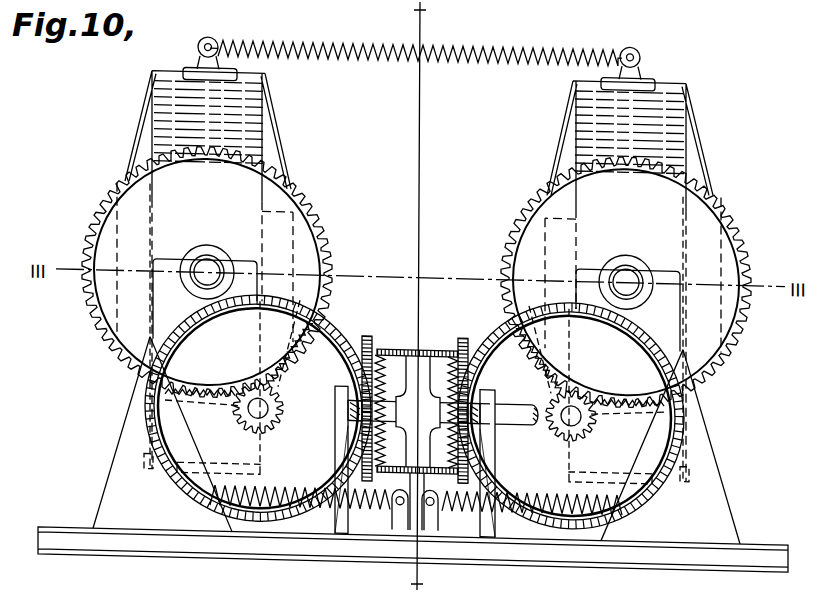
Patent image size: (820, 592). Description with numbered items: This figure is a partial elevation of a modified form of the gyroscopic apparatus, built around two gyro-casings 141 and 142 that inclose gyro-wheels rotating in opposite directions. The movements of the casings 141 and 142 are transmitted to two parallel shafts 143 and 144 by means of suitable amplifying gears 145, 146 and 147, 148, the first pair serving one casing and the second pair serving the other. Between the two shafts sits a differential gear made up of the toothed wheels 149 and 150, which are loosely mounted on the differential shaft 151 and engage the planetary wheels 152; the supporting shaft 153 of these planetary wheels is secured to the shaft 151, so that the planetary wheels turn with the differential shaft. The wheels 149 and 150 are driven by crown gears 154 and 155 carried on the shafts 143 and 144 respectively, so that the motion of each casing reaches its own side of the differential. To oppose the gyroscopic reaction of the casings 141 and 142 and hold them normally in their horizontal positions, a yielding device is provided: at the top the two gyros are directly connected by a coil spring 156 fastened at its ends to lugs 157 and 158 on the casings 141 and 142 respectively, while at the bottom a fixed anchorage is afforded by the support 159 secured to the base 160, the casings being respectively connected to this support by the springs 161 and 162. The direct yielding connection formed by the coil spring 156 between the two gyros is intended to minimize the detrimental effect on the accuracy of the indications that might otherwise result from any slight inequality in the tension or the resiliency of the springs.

The gyro-casing 141 is at (160, 98).
The gyro-casing 142 is at (680, 109).
The parallel shaft 143 is at (250, 408).
The parallel shaft 144 is at (582, 410).
The amplifying gear 145 is at (125, 187).
The amplifying gear 146 is at (172, 399).
The amplifying gear 147 is at (710, 182).
The amplifying gear 148 is at (590, 416).
The toothed wheel 149 is at (380, 319).
The toothed wheel 150 is at (459, 344).
The differential shaft 151 is at (510, 401).
The planetary wheels 152 is at (440, 344).
The supporting shaft 153 is at (437, 335).
The crown gear 154 is at (150, 452).
The crown gear 155 is at (660, 475).
The coil spring 156 is at (258, 31).
The lug 157 is at (198, 47).
The lug 158 is at (638, 42).
The support 159 is at (405, 517).
The base 160 is at (78, 508).
The spring 161 is at (262, 531).
The spring 162 is at (462, 514).